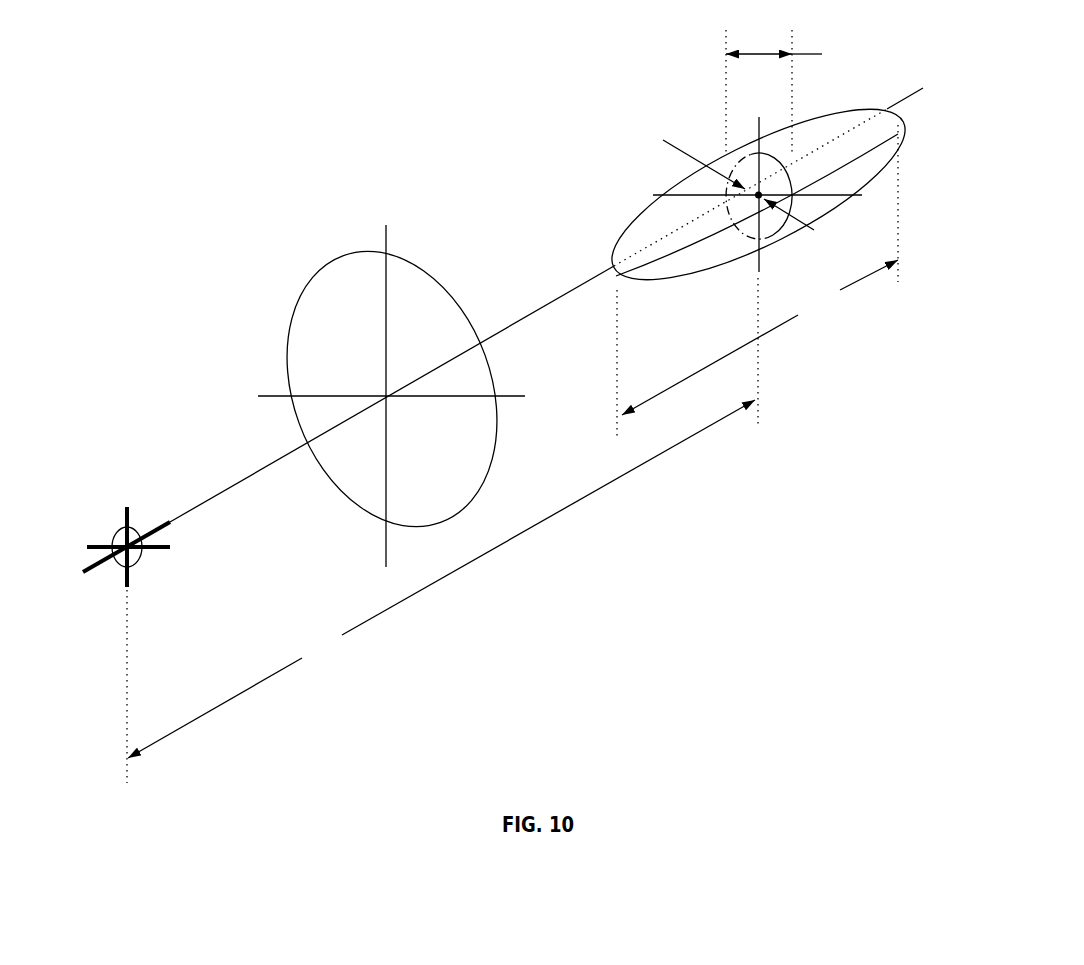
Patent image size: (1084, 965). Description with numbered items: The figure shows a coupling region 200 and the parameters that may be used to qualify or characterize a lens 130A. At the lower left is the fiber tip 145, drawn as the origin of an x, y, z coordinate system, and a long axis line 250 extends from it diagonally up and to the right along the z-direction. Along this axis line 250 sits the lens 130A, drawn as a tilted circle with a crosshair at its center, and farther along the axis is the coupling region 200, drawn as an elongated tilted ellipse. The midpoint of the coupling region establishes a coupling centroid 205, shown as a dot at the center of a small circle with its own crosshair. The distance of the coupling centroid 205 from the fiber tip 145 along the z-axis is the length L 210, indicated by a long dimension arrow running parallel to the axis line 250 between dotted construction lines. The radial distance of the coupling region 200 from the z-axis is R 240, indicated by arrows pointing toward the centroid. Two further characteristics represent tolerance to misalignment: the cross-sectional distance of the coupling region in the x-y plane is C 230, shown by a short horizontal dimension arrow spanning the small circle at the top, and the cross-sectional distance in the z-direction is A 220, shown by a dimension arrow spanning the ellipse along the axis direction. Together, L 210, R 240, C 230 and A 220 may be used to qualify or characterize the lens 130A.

The fiber tip 145 is at (112, 528).
The lens 130A is at (342, 246).
The coupling region 200 is at (897, 137).
The coupling centroid 205 is at (760, 195).
The distance L 210 is at (348, 657).
The cross-sectional distance A 220 is at (842, 312).
The cross-sectional distance C 230 is at (860, 48).
The radial distance R 240 is at (620, 122).
The optical axis line 250 is at (565, 283).